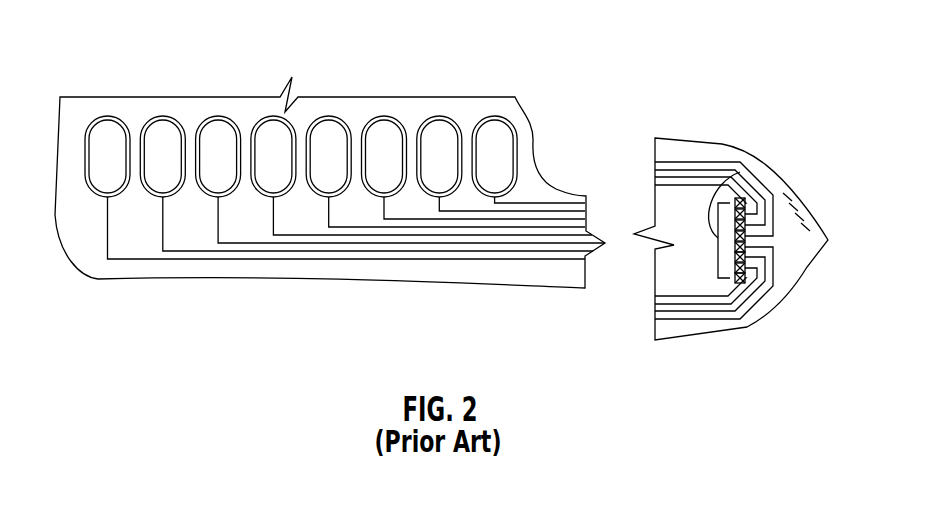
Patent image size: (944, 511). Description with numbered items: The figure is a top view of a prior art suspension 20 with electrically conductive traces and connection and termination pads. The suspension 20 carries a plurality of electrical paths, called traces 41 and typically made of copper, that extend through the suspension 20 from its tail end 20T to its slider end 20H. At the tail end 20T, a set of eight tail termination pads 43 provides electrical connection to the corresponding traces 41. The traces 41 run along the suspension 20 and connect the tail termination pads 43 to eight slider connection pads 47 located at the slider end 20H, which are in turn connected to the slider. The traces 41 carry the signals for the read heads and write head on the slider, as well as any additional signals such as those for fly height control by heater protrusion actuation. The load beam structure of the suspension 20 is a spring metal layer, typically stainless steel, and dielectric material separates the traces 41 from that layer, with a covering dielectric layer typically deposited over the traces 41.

The suspension 20 is at (111, 42).
The tail end 20T is at (100, 268).
The slider end 20H is at (781, 174).
The traces 41 is at (530, 243).
The tail termination pads 43 is at (94, 168).
The slider connection pads 47 is at (740, 172).